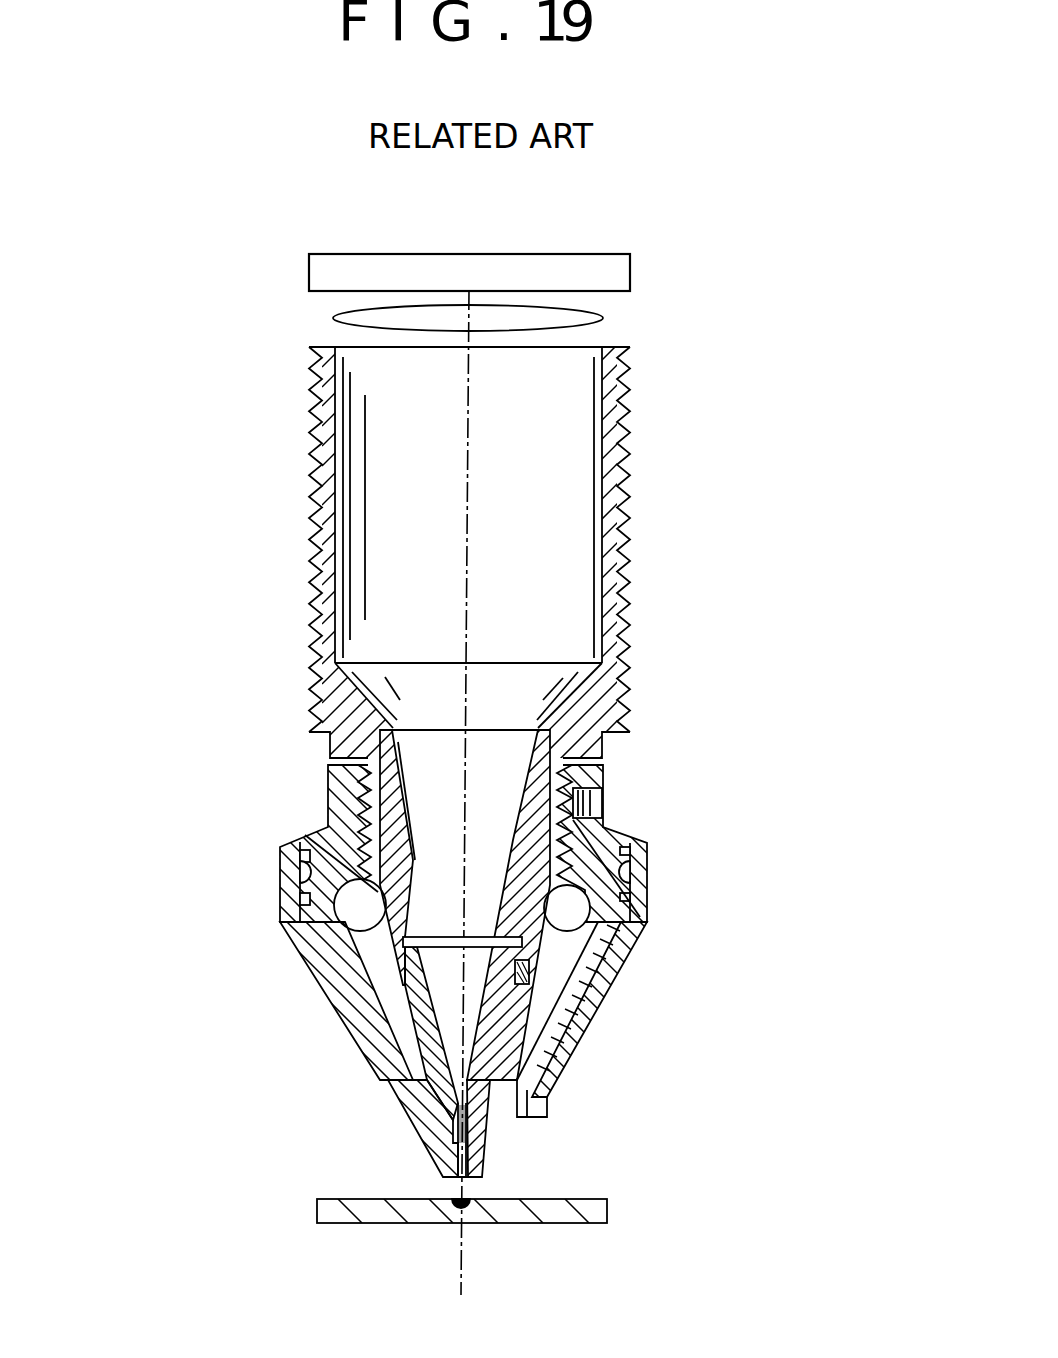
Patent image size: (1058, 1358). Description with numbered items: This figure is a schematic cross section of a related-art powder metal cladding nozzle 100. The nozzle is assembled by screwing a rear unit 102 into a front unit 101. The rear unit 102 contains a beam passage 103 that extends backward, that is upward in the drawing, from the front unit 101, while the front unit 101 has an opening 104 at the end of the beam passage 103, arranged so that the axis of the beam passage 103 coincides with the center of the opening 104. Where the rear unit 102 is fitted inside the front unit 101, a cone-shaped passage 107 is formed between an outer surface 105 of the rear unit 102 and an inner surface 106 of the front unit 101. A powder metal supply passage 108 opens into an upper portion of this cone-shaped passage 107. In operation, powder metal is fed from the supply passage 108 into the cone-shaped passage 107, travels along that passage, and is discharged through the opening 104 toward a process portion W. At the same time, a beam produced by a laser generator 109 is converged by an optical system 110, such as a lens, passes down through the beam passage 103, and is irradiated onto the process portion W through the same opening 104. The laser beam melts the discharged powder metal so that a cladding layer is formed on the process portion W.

The powder metal cladding nozzle 100 is at (247, 252).
The front unit 101 is at (628, 975).
The rear unit 102 is at (638, 584).
The beam passage 103 is at (527, 506).
The opening 104 is at (467, 1179).
The outer surface 105 is at (585, 938).
The inner surface 106 is at (520, 1017).
The cone-shaped passage 107 is at (383, 973).
The powder metal supply passage 108 is at (305, 835).
The laser generator 109 is at (617, 280).
The optical system 110 is at (605, 318).
The process portion W is at (455, 1202).